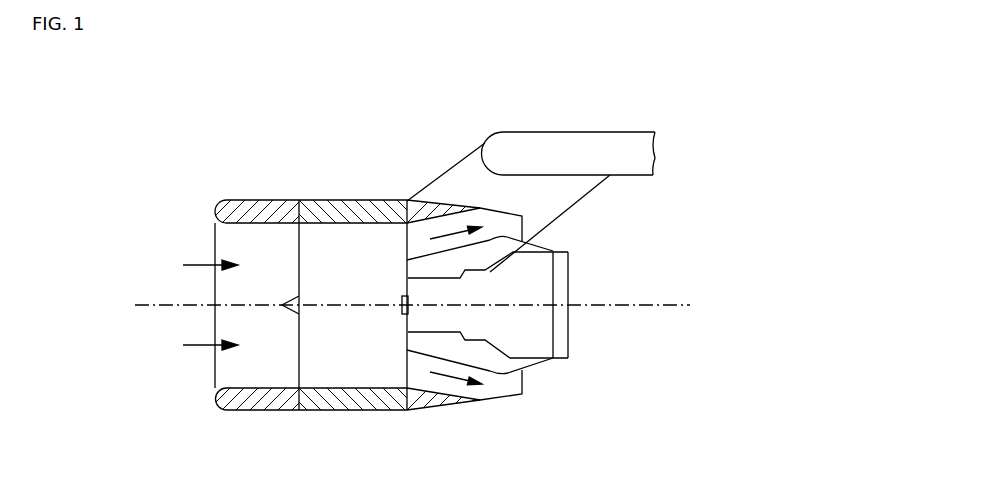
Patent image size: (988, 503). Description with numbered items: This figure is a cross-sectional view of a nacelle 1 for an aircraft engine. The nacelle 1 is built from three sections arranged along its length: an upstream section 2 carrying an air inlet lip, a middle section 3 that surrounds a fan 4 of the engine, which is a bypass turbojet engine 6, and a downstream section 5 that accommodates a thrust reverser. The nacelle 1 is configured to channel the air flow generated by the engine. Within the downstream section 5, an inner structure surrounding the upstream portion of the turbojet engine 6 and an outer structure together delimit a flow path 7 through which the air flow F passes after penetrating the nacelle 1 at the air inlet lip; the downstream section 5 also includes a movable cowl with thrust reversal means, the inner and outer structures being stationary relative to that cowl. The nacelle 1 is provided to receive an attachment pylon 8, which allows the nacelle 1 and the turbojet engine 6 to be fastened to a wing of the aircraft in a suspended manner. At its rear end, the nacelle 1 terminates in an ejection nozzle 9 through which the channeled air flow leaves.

The nacelle 1 is at (287, 150).
The upstream section 2 is at (258, 412).
The middle section 3 is at (355, 412).
The fan 4 is at (350, 250).
The downstream section 5 is at (425, 210).
The bypass turbojet engine 6 is at (488, 222).
The flow path 7 is at (512, 229).
The attachment pylon 8 is at (587, 147).
The ejection nozzle 9 is at (548, 247).